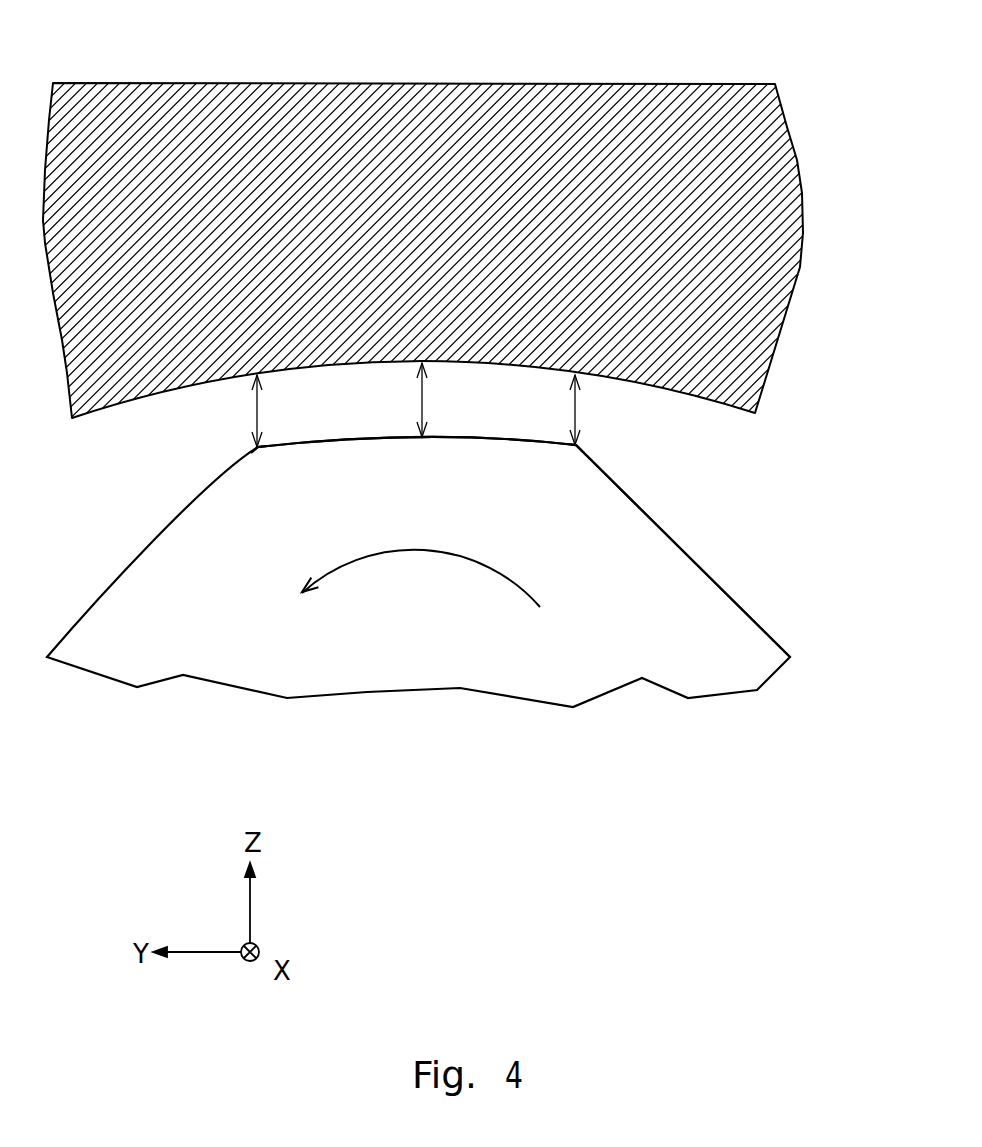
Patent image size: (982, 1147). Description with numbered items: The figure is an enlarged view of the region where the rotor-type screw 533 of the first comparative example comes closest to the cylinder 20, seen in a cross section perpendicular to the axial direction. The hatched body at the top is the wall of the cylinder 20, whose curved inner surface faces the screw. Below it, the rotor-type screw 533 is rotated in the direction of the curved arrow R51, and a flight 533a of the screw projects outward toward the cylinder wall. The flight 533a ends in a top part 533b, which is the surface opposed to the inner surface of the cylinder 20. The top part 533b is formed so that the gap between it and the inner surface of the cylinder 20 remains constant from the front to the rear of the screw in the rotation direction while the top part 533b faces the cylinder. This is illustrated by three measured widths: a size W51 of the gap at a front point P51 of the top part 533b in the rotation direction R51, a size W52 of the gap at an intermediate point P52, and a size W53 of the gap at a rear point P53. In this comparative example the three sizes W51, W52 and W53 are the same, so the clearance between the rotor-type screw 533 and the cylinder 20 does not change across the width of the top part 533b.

The cylinder 20 is at (383, 98).
The rotor-type screw 533 is at (737, 755).
The flight 533a is at (580, 455).
The top part 533b is at (503, 440).
The front point P51 is at (258, 447).
The intermediate point P52 is at (422, 437).
The rear point P53 is at (579, 445).
The size of gap at front point W51 is at (232, 411).
The size of gap at intermediate point W52 is at (400, 400).
The size of gap at rear point W53 is at (552, 410).
The rotation direction R51 is at (421, 578).